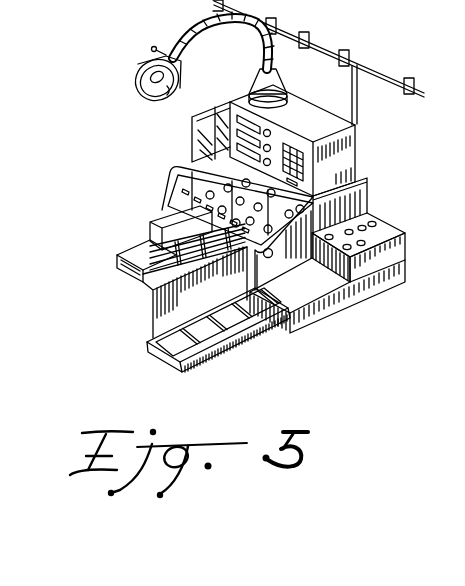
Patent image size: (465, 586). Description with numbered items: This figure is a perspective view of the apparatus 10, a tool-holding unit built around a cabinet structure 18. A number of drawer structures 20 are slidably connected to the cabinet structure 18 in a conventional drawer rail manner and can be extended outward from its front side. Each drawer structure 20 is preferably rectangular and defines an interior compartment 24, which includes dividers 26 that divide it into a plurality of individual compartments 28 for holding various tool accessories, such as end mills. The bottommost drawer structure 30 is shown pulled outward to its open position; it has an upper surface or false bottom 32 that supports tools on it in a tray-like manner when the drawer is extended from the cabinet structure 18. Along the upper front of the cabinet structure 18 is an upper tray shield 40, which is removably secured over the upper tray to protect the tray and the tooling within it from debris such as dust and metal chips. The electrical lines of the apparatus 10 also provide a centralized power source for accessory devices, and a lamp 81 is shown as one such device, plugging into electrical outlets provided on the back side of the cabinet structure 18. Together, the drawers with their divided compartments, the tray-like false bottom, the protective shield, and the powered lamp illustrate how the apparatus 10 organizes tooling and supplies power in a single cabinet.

The apparatus 10 is at (370, 177).
The cabinet structure 18 is at (178, 175).
The drawer structures 20 is at (137, 246).
The interior compartment 24 is at (157, 222).
The dividers 26 is at (133, 252).
The individual compartments 28 is at (174, 275).
The bottommost drawer structure 30 is at (118, 270).
The false bottom 32 is at (172, 276).
The upper tray shield 40 is at (188, 158).
The lamp 81 is at (180, 33).